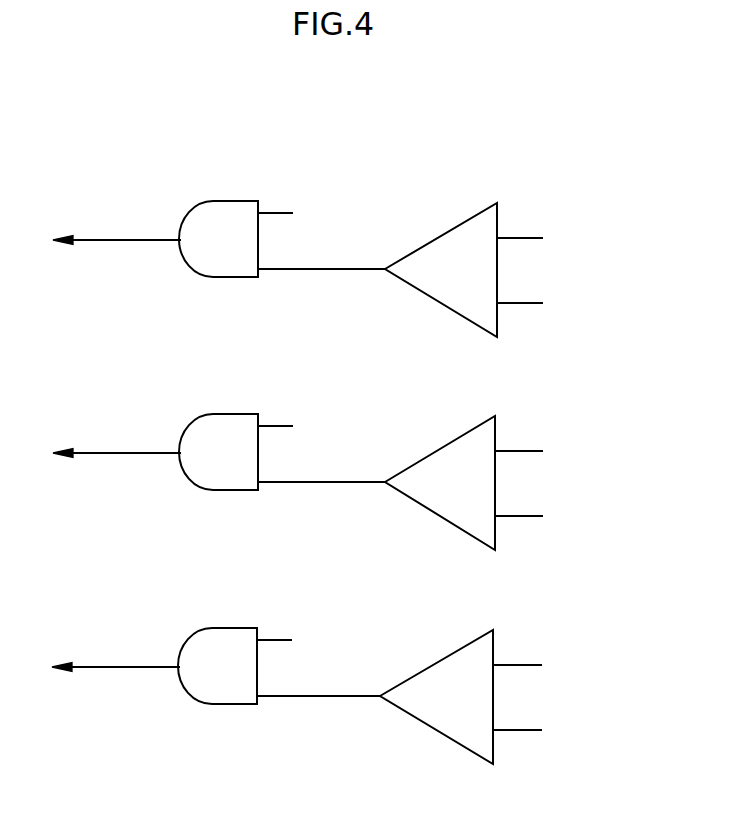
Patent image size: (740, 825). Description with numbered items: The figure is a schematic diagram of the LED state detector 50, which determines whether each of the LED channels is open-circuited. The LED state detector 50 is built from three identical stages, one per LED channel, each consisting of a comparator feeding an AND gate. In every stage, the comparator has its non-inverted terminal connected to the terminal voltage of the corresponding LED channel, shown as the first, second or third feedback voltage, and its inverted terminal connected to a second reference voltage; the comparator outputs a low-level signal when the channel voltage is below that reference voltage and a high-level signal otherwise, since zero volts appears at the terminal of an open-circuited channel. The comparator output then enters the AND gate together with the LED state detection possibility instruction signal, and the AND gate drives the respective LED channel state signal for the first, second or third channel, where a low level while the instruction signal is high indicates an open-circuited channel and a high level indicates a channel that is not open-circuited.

The LED state detector 50 is at (337, 102).